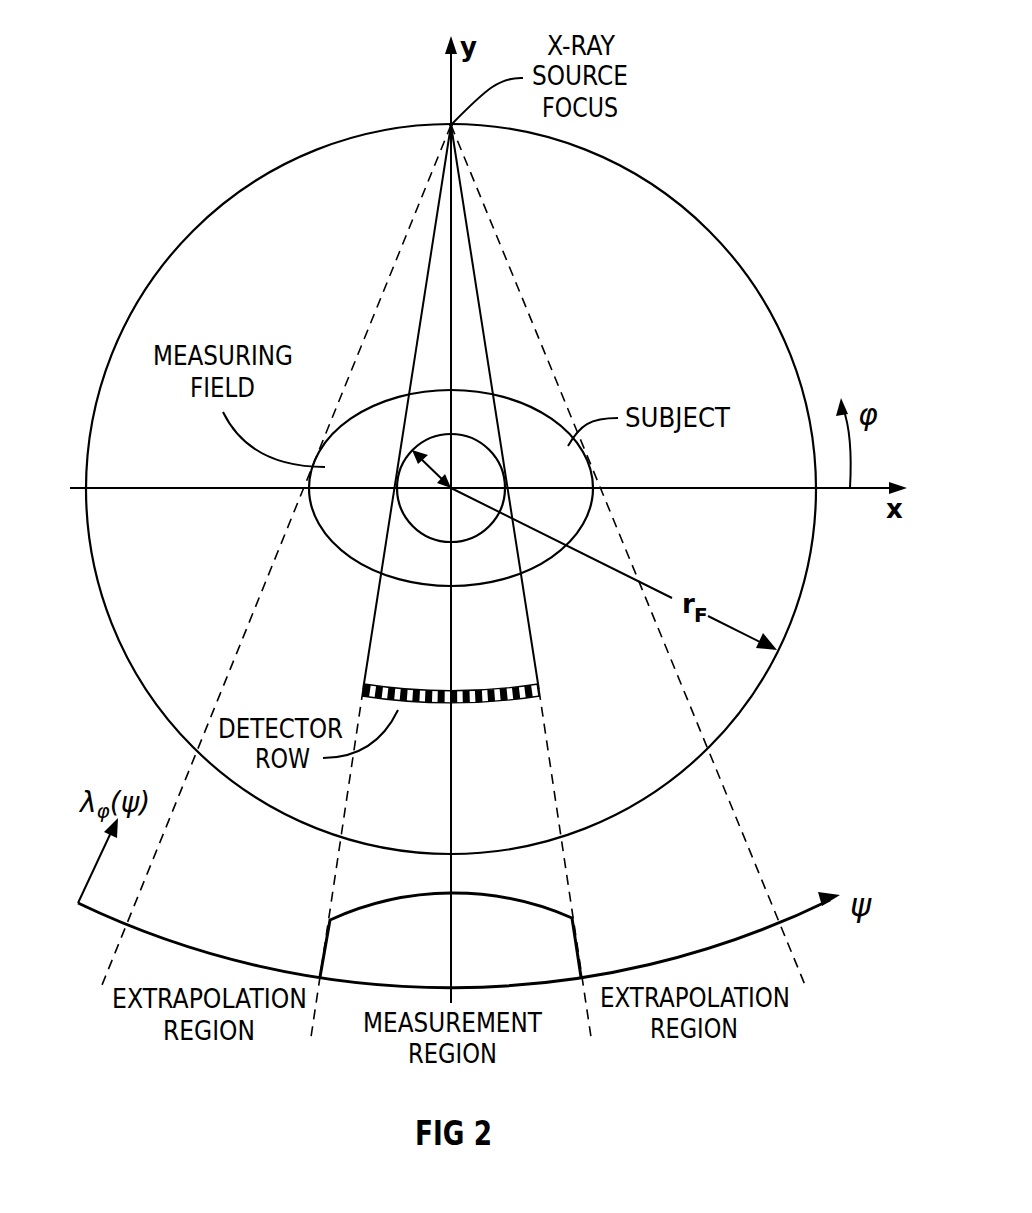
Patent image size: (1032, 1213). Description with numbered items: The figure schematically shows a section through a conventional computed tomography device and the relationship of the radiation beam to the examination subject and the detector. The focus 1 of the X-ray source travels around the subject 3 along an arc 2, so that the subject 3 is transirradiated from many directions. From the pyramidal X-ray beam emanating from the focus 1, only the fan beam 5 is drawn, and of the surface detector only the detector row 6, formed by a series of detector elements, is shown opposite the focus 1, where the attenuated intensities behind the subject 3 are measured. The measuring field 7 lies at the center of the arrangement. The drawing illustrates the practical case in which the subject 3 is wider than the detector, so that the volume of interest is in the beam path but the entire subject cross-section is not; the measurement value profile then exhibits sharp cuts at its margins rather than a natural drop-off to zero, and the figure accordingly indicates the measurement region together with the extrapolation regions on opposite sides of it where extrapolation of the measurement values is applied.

The focus 1 is at (451, 125).
The arc 2 is at (715, 235).
The subject 3 is at (512, 400).
The fan beam 5 is at (418, 338).
The detector row 6 is at (487, 707).
The measuring field 7 is at (473, 543).